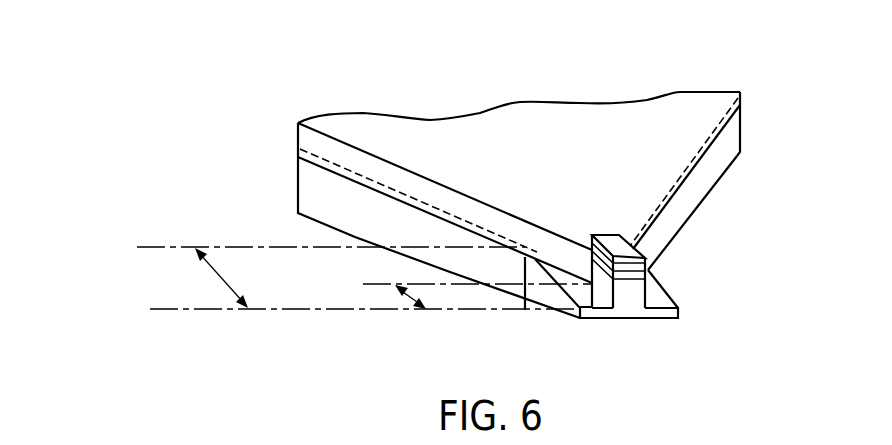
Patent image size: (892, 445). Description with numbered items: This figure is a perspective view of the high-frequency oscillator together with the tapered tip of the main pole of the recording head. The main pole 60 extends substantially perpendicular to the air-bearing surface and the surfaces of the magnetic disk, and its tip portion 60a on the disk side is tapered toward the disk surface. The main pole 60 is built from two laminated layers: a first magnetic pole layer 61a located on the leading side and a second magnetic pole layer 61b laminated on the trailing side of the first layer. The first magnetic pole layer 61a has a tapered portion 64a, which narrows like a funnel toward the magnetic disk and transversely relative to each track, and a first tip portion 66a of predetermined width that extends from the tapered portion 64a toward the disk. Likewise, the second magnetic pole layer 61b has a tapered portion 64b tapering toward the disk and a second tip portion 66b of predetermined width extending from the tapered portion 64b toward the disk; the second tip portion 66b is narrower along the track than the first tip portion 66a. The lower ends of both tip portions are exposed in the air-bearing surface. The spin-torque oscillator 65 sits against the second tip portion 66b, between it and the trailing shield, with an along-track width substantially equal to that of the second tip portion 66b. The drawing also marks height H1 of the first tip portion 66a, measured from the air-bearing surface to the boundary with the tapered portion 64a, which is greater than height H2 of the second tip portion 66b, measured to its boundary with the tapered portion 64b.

The main pole 60 is at (323, 99).
The tip portion 60a is at (638, 324).
The first magnetic pole layer 61a is at (326, 187).
The second magnetic pole layer 61b is at (598, 129).
The tapered portion 64a is at (341, 213).
The tapered portion 64b is at (655, 172).
The spin-torque oscillator 65 is at (625, 250).
The first tip portion 66a is at (657, 297).
The second tip portion 66b is at (606, 284).
The height of the first tip portion H1 is at (358, 278).
The height of the second tip portion H2 is at (477, 297).